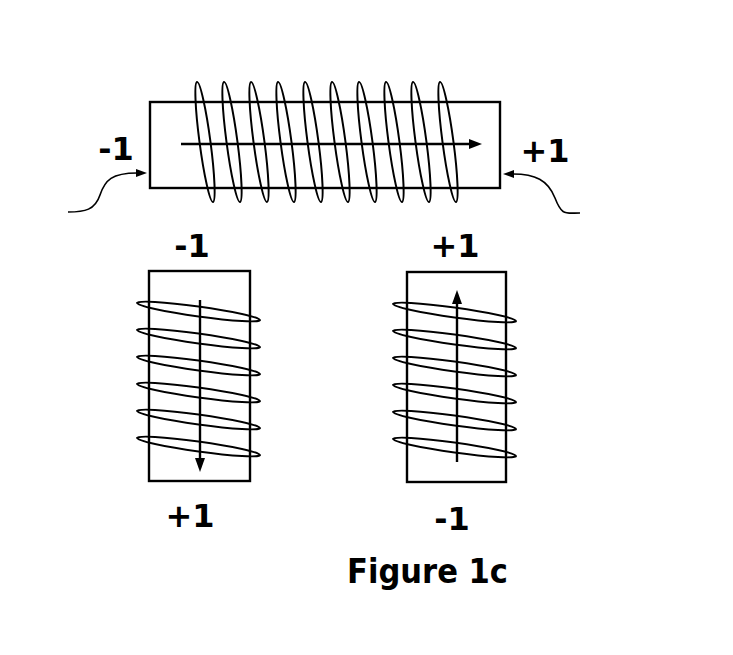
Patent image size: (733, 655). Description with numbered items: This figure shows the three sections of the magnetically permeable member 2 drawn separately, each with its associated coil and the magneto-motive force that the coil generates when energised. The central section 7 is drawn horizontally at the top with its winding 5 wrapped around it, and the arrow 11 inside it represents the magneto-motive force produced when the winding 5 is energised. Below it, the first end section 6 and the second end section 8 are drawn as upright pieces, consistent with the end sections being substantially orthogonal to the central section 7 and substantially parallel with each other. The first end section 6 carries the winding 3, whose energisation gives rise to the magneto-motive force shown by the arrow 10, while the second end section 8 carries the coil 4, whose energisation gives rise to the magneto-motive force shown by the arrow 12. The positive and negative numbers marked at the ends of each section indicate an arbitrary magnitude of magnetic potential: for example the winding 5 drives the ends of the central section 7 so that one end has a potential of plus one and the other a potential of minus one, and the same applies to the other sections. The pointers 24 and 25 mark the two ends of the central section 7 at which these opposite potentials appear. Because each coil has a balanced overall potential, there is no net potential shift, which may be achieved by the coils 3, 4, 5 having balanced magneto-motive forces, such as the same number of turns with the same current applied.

The magnetically permeable member 2 is at (498, 336).
The winding 3 is at (137, 357).
The coil 4 is at (517, 429).
The winding 5 is at (361, 100).
The first end section 6 is at (157, 286).
The central section 7 is at (468, 117).
The second end section 8 is at (490, 297).
The magneto-motive force 10 is at (196, 431).
The magneto-motive force 11 is at (298, 143).
The magneto-motive force 12 is at (505, 376).
The input signal -1 24 is at (88, 198).
The input signal +1 25 is at (559, 199).